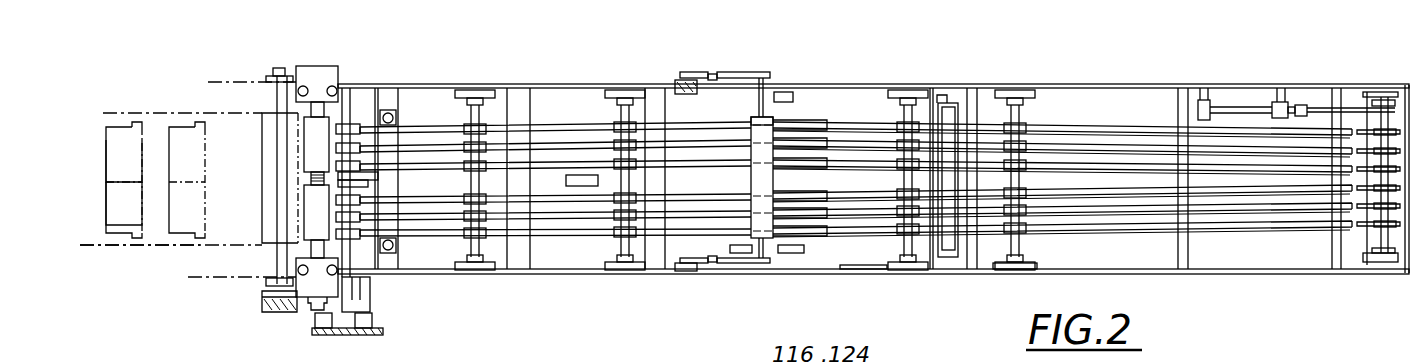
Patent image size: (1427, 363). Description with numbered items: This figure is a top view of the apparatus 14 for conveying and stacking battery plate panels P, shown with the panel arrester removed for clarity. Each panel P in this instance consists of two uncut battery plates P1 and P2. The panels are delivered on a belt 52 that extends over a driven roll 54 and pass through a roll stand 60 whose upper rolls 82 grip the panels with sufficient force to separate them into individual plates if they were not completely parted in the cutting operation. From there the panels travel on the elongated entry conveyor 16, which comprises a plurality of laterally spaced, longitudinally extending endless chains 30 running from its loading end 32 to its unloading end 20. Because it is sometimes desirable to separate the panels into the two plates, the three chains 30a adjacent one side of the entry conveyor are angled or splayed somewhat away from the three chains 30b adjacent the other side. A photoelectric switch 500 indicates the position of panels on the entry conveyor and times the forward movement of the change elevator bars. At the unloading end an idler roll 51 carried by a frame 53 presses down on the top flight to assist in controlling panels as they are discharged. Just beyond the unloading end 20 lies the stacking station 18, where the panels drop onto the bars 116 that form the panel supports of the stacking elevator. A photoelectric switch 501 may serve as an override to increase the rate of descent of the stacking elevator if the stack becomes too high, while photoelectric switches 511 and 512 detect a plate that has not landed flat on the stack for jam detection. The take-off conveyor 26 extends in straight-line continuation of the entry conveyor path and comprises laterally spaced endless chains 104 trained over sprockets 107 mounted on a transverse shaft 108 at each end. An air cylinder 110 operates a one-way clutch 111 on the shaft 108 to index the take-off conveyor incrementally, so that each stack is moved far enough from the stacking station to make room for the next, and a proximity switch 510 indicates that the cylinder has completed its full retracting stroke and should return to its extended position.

The battery plate panels P is at (122, 117).
The battery plate P1 is at (167, 152).
The battery plate P2 is at (168, 200).
The belt 52 is at (135, 246).
The roll 54 is at (262, 152).
The upper rolls 82 is at (304, 163).
The roll stand 60 is at (320, 64).
The loading end 32 is at (375, 260).
The entry conveyor 16 is at (576, 82).
The chains 30 is at (583, 122).
The chains 30a is at (412, 166).
The chains 30b is at (458, 204).
The photoelectric switch 500 is at (572, 183).
The frame 53 is at (690, 72).
The unloading end 20 is at (756, 117).
The idler roll 51 is at (762, 118).
The photoelectric switch 501 is at (778, 118).
The stacking station 18 is at (803, 112).
The bars 116 is at (836, 142).
The photoelectric switch 511 is at (740, 252).
The photoelectric switch 512 is at (795, 252).
The take-off conveyor 26 is at (1085, 112).
The apparatus 14 is at (1158, 79).
The chains 104 is at (1213, 132).
The air cylinder 110 is at (1250, 106).
The proximity switch 510 is at (1298, 106).
The one-way clutch 111 is at (1398, 66).
The sprockets 107 is at (1380, 208).
The transverse shaft 108 is at (1385, 245).